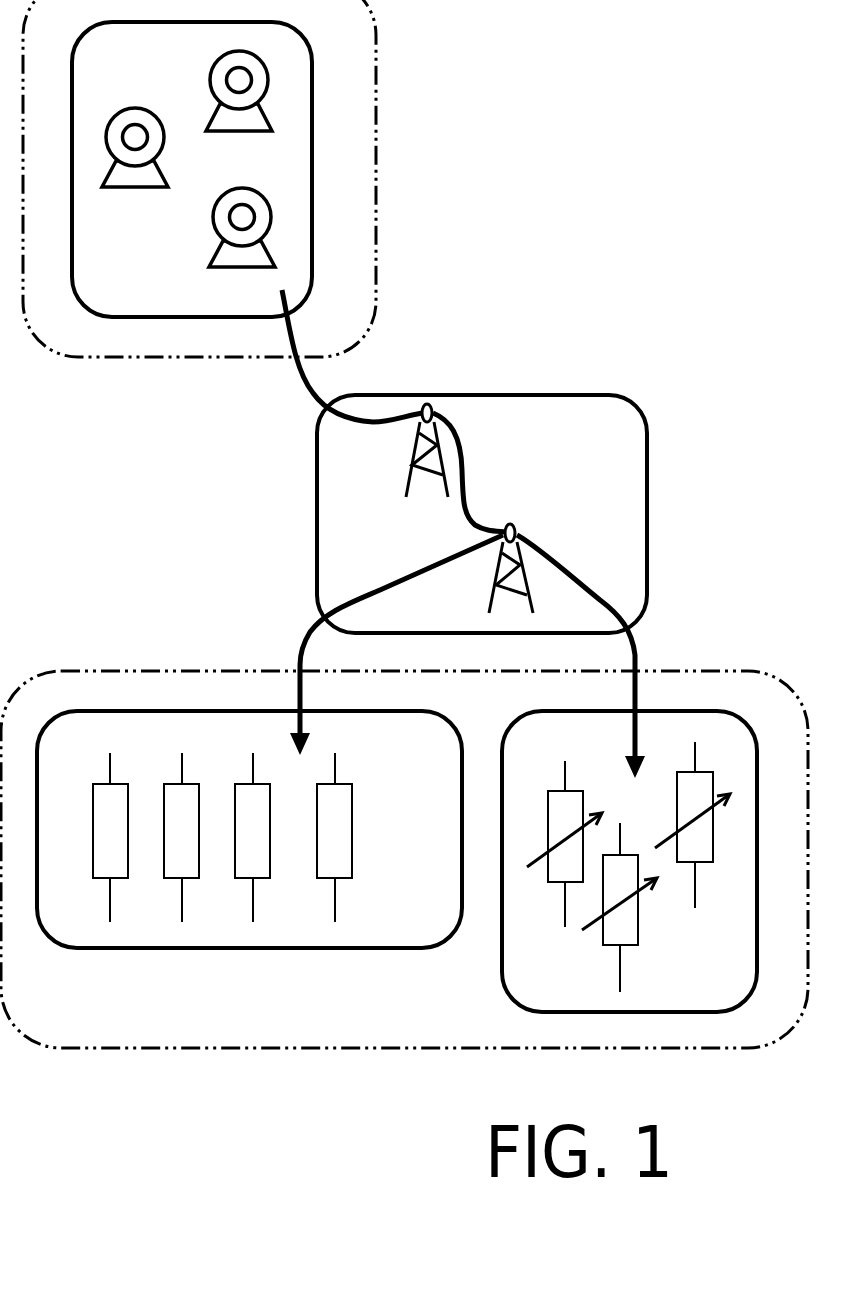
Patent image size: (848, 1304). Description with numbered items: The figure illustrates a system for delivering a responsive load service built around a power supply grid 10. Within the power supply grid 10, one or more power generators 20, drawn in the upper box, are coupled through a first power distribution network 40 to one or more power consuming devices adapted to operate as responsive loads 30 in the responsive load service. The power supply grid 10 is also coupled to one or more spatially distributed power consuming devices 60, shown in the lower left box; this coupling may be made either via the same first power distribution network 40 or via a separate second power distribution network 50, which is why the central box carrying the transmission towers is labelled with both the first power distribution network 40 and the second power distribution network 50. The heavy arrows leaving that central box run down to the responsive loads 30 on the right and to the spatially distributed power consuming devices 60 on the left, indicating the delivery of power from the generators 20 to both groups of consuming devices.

The power supply grid 10 is at (737, 547).
The power generators 20 is at (161, 255).
The responsive loads 30 is at (693, 974).
The first power distribution network 40 is at (464, 534).
The second power distribution network 50 is at (469, 508).
The spatially distributed power consuming devices 60 is at (426, 880).